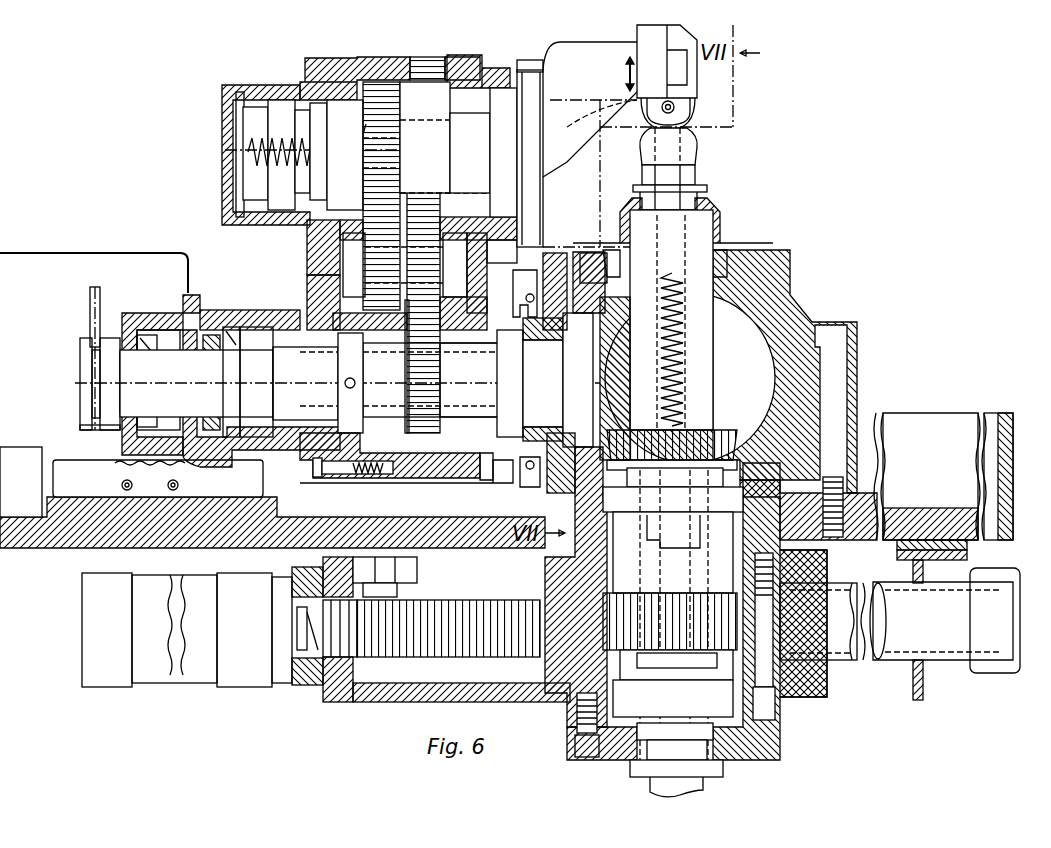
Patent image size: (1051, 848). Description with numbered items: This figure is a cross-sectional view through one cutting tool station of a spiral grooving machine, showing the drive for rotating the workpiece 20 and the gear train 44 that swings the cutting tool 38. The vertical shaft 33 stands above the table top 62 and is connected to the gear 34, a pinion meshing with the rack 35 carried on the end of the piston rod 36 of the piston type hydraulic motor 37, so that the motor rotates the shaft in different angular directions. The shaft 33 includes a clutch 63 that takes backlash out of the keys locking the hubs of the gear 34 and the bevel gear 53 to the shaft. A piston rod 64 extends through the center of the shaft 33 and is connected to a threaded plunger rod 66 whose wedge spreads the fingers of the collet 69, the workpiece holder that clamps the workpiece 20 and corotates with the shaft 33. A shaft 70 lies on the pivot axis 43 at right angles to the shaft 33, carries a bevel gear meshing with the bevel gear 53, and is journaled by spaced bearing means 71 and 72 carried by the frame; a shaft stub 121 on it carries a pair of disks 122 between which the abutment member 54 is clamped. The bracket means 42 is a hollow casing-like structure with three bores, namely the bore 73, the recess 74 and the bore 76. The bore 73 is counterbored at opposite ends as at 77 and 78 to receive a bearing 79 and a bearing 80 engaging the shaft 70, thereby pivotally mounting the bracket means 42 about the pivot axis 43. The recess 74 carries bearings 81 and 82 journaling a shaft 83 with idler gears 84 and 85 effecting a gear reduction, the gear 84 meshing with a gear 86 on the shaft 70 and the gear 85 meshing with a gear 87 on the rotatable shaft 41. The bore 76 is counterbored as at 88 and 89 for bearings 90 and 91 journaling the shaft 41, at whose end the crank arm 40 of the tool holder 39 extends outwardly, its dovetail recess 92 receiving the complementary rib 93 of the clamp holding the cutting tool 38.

The workpiece 20 is at (706, 138).
The shaft 33 is at (713, 350).
The pinion 34 is at (612, 650).
The rack 35 is at (463, 599).
The piston rod 36 is at (301, 689).
The hydraulic motor 37 is at (170, 686).
The cutting tool 38 is at (725, 114).
The tool holder 39 is at (588, 210).
The crank arm 40 is at (596, 41).
The rotatable shaft 41 is at (429, 126).
The bracket means 42 is at (332, 60).
The pivot axis 43 is at (312, 388).
The gear train 44 is at (405, 330).
The bevel gear 53 is at (727, 438).
The abutment member 54 is at (101, 297).
The table top 62 is at (318, 517).
The clutch 63 is at (673, 485).
The piston rod 64 is at (695, 790).
The threaded plunger rod 66 is at (682, 314).
The collet 69 is at (698, 179).
The shaft 70 is at (347, 372).
The bearing means 71 is at (160, 327).
The bearing means 72 is at (572, 291).
The bore 73 is at (417, 453).
The recess 74 is at (310, 258).
The bore 76 is at (327, 110).
The counterbore 77 is at (260, 328).
The counterbore 78 is at (510, 312).
The bearing 79 is at (268, 403).
The bearing 80 is at (499, 405).
The bearing 81 is at (337, 316).
The bearing 82 is at (462, 218).
The shaft 83 is at (310, 281).
The idler gear 84 is at (422, 193).
The idler gear 85 is at (343, 237).
The gear 86 is at (441, 374).
The gear 87 is at (398, 92).
The counterbore 88 is at (283, 91).
The counterbore 89 is at (516, 70).
The bearing 90 is at (277, 222).
The bearing 91 is at (496, 131).
The dovetail recess 92 is at (628, 68).
The rib 93 is at (628, 91).
The shaft stub 121 is at (82, 383).
The disks 122 is at (93, 432).